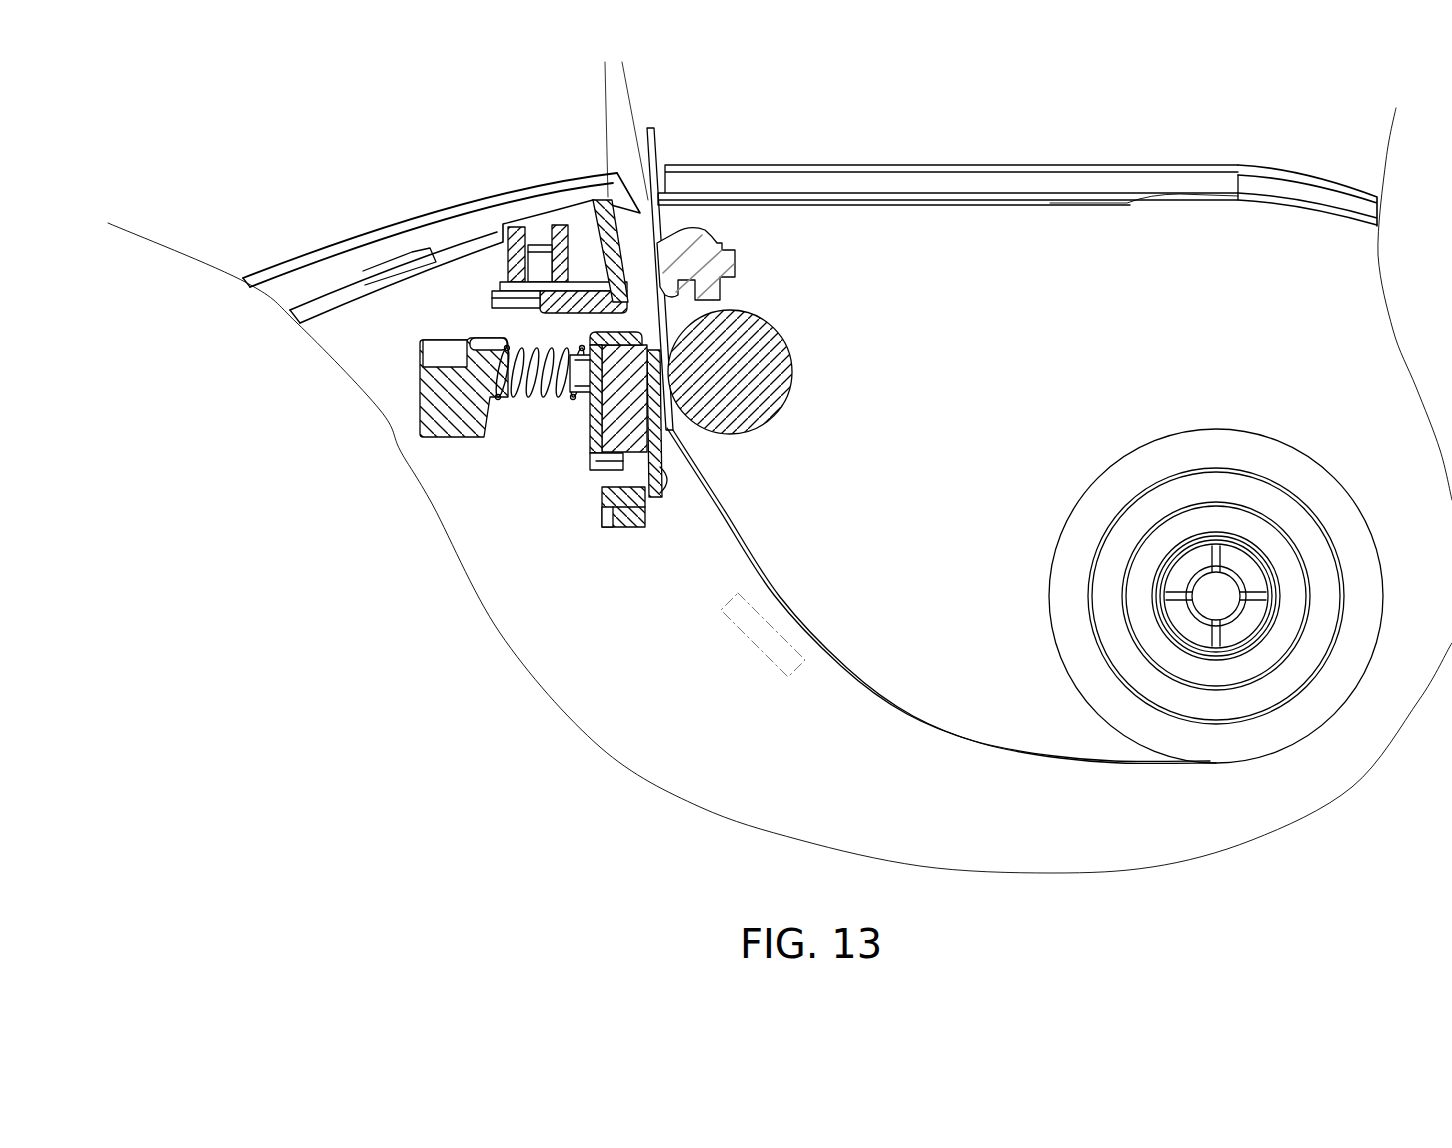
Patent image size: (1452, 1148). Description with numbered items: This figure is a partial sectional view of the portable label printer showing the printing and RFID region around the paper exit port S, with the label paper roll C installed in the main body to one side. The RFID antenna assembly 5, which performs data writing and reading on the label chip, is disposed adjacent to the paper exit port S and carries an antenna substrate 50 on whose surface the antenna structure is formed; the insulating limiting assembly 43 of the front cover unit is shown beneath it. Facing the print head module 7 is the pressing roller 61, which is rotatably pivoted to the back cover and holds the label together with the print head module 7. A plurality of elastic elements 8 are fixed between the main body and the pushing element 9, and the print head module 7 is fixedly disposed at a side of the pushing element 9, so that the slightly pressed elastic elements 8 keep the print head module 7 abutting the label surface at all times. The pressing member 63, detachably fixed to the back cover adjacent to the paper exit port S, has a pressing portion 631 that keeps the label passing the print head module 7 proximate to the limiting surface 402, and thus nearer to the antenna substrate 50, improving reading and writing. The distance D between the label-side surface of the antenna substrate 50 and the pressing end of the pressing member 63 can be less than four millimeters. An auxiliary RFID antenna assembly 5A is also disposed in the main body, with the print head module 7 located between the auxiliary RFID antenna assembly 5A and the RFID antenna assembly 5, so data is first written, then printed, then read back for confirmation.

The RFID antenna assembly 5 is at (500, 242).
The auxiliary RFID antenna assembly 5A is at (728, 620).
The antenna substrate 50 is at (587, 213).
The limiting surface 402 is at (630, 187).
The insulating limiting assembly 43 is at (543, 311).
The print head module 7 is at (660, 455).
The pressing roller 61 is at (792, 372).
The pressing member 63 is at (743, 216).
The pressing portion 631 is at (673, 243).
The elastic element 8 is at (540, 402).
The pushing element 9 is at (597, 447).
The label paper roll C is at (1207, 429).
The paper exit port S is at (635, 182).
The distance D is at (650, 60).